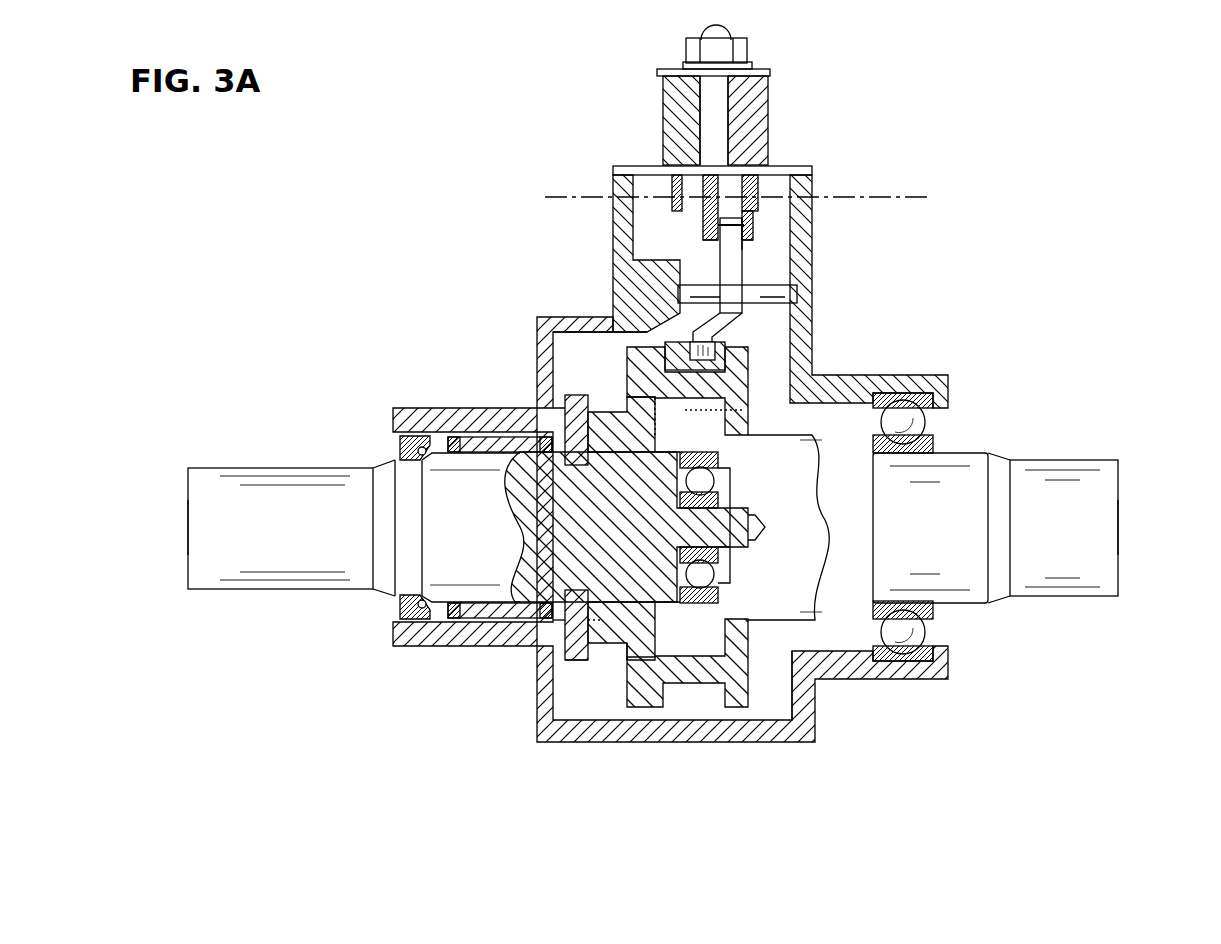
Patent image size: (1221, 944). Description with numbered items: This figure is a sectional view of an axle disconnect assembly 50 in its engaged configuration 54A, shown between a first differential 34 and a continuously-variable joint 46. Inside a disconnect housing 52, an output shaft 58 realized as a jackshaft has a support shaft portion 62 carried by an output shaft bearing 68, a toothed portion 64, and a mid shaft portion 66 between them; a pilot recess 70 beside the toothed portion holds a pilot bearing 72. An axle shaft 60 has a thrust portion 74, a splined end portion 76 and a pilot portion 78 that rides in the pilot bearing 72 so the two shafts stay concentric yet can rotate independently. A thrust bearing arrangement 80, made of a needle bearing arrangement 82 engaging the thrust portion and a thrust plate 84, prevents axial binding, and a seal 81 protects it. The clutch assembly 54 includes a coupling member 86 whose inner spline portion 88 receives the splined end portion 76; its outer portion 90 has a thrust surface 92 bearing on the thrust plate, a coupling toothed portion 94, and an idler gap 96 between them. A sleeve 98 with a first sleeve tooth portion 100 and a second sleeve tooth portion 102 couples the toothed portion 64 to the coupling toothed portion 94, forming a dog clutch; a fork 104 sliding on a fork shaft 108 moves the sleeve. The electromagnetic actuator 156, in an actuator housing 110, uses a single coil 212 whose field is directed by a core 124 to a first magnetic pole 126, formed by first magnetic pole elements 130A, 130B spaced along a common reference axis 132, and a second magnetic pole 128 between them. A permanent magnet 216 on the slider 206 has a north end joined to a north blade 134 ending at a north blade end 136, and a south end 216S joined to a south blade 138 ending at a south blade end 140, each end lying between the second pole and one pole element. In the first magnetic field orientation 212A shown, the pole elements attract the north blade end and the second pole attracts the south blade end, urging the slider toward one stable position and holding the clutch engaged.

The first differential 34 is at (1120, 525).
The continuously-variable joint 46 is at (186, 527).
The axle disconnect assembly 50 is at (455, 235).
The disconnect housing 52 is at (800, 362).
The clutch assembly 54 is at (701, 287).
The engaged configuration 54A is at (660, 342).
The output shaft 58 is at (1060, 500).
The axle shaft 60 is at (245, 495).
The support shaft portion 62 is at (922, 476).
The toothed portion 64 is at (712, 405).
The mid shaft portion 66 is at (862, 522).
The output shaft bearing 68 is at (905, 632).
The pilot recess 70 is at (800, 690).
The pilot bearing 72 is at (702, 582).
The thrust portion 74 is at (470, 500).
The splined end portion 76 is at (580, 527).
The pilot portion 78 is at (690, 528).
The thrust bearing arrangement 80 is at (550, 630).
The seal 81 is at (400, 438).
The needle bearing arrangement 82 is at (466, 440).
The thrust plate 84 is at (560, 650).
The coupling member 86 is at (590, 402).
The inner spline portion 88 is at (600, 622).
The outer portion 90 is at (570, 662).
The thrust surface 92 is at (564, 427).
The coupling toothed portion 94 is at (640, 680).
The idler gap 96 is at (625, 655).
The sleeve 98 is at (735, 372).
The first sleeve tooth portion 100 is at (628, 412).
The second sleeve tooth portion 102 is at (720, 412).
The fork 104 is at (735, 330).
The fork shaft 108 is at (790, 296).
The actuator housing 110 is at (740, 91).
The core 124 is at (714, 93).
The first magnetic pole 126 is at (708, 114).
The second magnetic pole 128 is at (716, 172).
The first magnetic pole element 130A is at (755, 186).
The first magnetic pole element 130B is at (676, 196).
The common reference axis 132 is at (882, 195).
The north blade 134 is at (755, 236).
The north blade end 136 is at (750, 205).
The south blade 138 is at (704, 236).
The south blade end 140 is at (710, 180).
The electromagnetic actuator 156 is at (684, 66).
The slider 206 is at (866, 244).
The single coil 212 is at (762, 93).
The first magnetic field orientation 212A is at (712, 78).
The permanent magnet 216 is at (712, 254).
The south end 216S is at (795, 254).